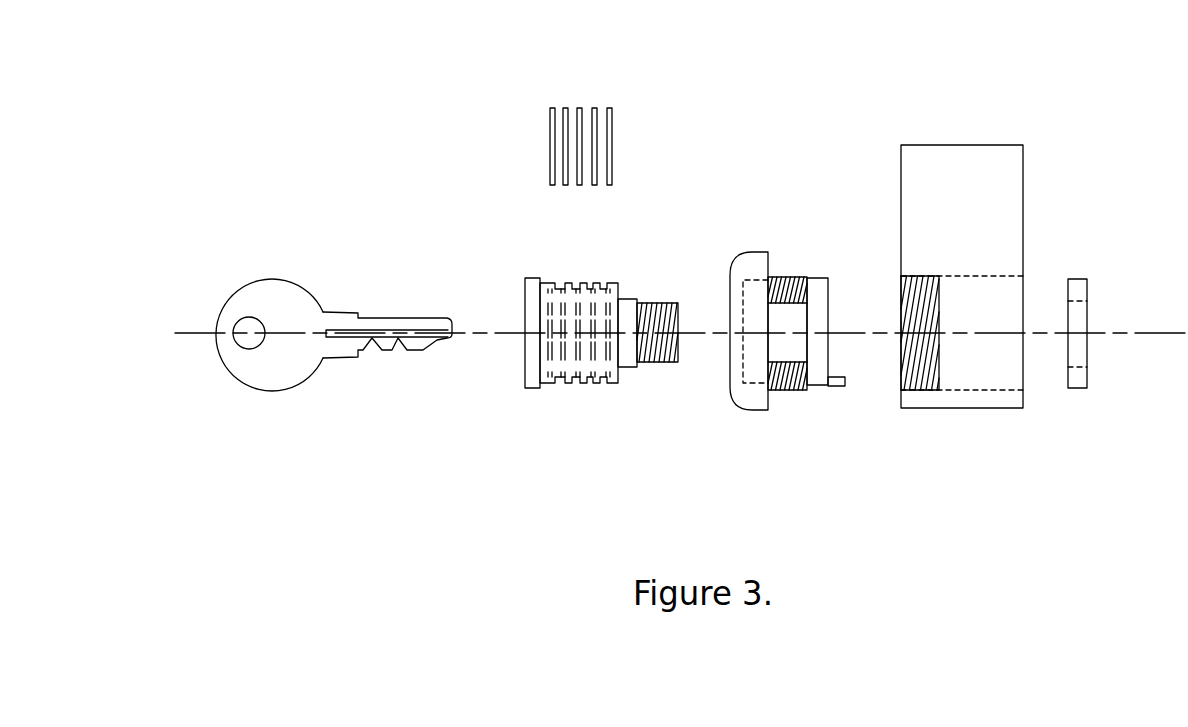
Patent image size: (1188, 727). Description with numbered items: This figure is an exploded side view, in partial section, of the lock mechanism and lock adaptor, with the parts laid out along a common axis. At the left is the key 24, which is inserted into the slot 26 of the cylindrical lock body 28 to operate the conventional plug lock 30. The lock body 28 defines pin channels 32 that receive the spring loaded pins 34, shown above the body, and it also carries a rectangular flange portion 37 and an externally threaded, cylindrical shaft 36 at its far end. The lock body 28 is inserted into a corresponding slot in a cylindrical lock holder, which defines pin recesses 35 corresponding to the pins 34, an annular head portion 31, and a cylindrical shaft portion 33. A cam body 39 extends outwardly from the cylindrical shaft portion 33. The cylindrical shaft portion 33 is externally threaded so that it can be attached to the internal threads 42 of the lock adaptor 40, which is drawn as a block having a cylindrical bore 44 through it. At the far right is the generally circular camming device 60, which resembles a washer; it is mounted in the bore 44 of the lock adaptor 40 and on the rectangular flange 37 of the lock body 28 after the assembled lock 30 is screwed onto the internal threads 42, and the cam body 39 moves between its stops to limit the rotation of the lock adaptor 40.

The key 24 is at (272, 360).
The slot 26 is at (524, 336).
The cylindrical lock body 28 is at (579, 360).
The plug lock 30 is at (704, 307).
The annular head portion 31 is at (758, 268).
The pin channels 32 is at (597, 283).
The cylindrical shaft portion 33 is at (810, 293).
The spring loaded pins 34 is at (621, 96).
The pin recesses 35 is at (794, 290).
The externally threaded cylindrical shaft 36 is at (673, 362).
The rectangular flange portion 37 is at (628, 355).
The cam body 39 is at (838, 385).
The lock adaptor 40 is at (1028, 286).
The internal threads 42 is at (920, 375).
The cylindrical bore 44 is at (992, 293).
The camming device 60 is at (1082, 385).